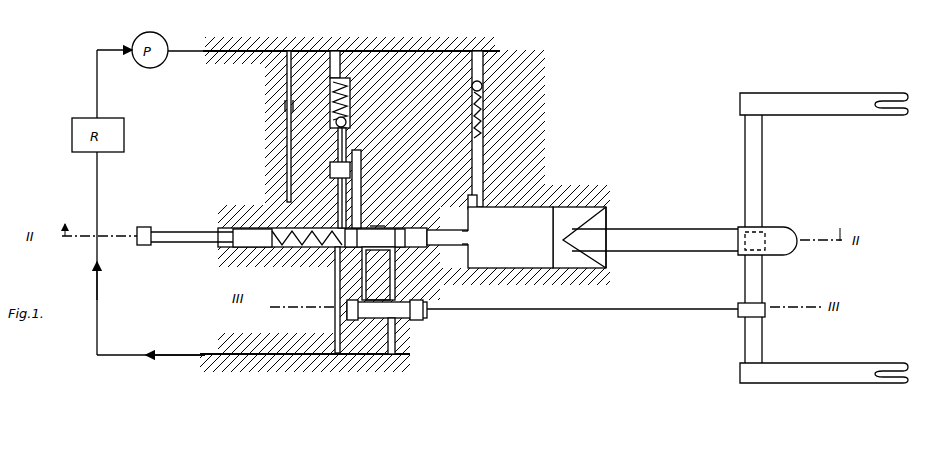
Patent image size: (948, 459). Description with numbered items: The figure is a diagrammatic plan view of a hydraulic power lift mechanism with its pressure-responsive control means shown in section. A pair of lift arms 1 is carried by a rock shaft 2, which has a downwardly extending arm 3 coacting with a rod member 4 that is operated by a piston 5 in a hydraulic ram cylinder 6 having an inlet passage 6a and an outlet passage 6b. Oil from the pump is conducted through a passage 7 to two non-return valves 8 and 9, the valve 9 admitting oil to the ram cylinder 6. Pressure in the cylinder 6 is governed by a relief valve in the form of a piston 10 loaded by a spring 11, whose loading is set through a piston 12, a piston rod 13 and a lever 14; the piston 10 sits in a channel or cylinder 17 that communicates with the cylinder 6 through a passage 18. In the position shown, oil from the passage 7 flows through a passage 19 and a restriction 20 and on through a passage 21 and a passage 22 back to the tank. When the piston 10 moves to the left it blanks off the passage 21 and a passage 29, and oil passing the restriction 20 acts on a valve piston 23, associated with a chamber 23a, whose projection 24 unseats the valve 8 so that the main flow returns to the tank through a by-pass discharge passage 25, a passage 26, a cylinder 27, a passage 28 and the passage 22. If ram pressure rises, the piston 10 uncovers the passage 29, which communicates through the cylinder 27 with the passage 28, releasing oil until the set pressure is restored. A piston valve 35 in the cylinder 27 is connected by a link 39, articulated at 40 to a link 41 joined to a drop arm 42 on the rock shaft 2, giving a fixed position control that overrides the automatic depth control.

The lift arms 1 is at (872, 117).
The rock shaft 2 is at (748, 170).
The downwardly extending arm 3 is at (778, 230).
The rod member 4 is at (690, 244).
The piston 5 is at (578, 207).
The hydraulic ram cylinder 6 is at (510, 237).
The inlet passage 6a is at (486, 146).
The outlet passage 6b is at (445, 218).
The passage 7 is at (420, 52).
The non-return valve 8 is at (352, 120).
The non-return valve 9 is at (486, 97).
The piston 10 is at (365, 226).
The spring 11 is at (290, 250).
The piston 12 is at (245, 250).
The piston rod 13 is at (183, 245).
The lever 14 is at (143, 247).
The channel or cylinder 17 is at (420, 241).
The passage 18 is at (466, 250).
The passage 19 is at (287, 84).
The restriction 20 is at (289, 108).
The passage 21 is at (333, 322).
The passage 22 is at (232, 365).
The valve piston 23 is at (348, 175).
The chamber 23a is at (336, 152).
The projection 24 is at (350, 168).
The by-pass discharge passage 25 is at (360, 192).
The passage 26 is at (337, 272).
The cylinder 27 is at (394, 335).
The passage 28 is at (386, 355).
The passage 29 is at (396, 272).
The piston valve 35 is at (420, 318).
The link 39 is at (500, 308).
The articulation 40 is at (552, 308).
The link 41 is at (604, 308).
The drop arm 42 is at (746, 318).